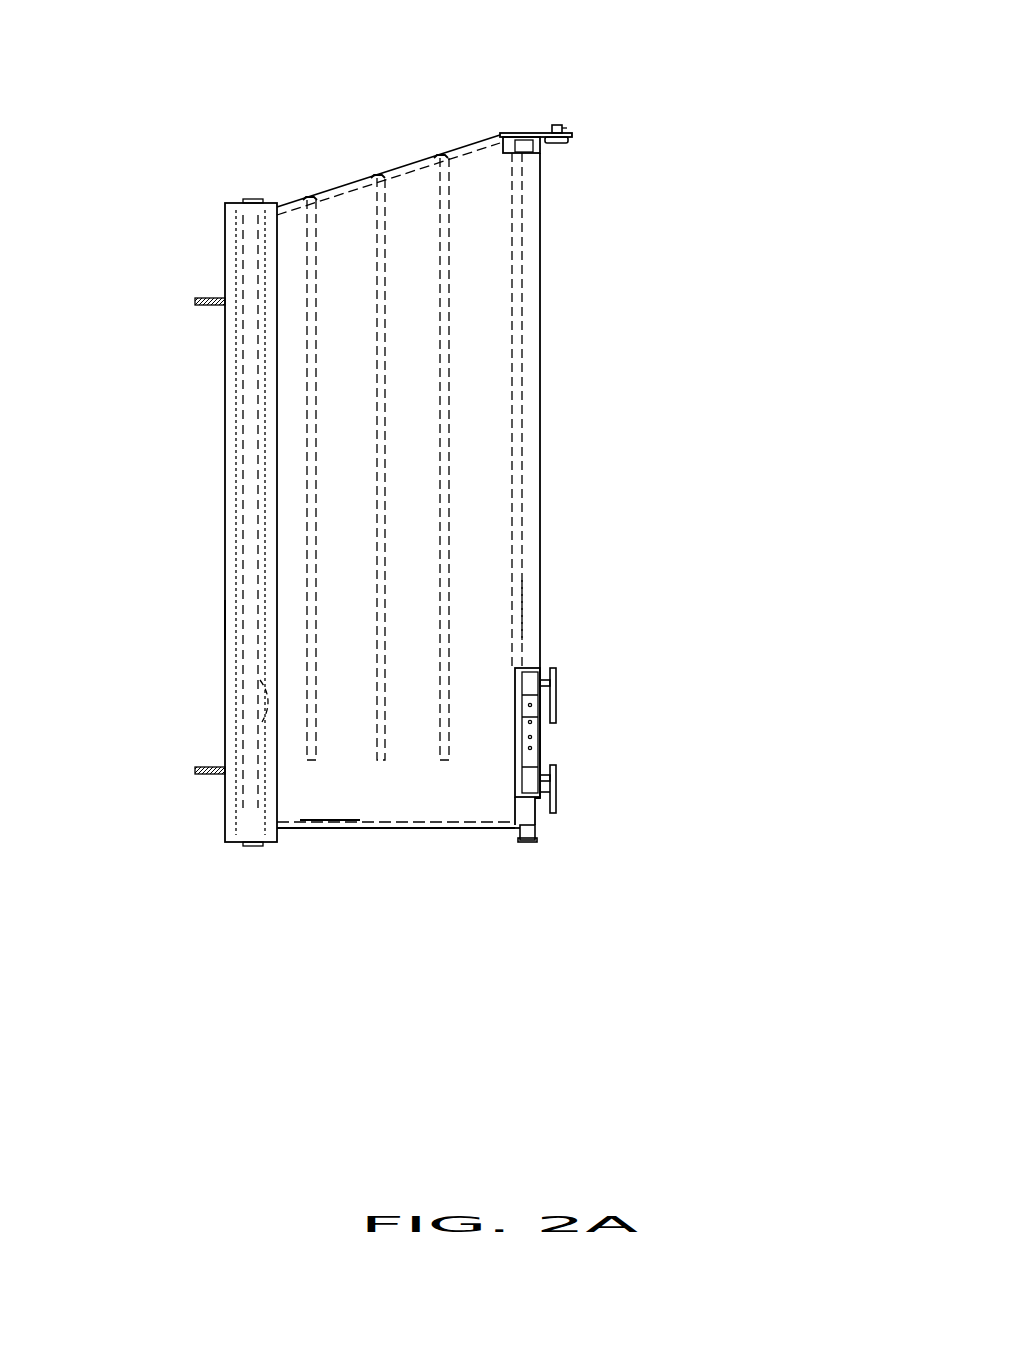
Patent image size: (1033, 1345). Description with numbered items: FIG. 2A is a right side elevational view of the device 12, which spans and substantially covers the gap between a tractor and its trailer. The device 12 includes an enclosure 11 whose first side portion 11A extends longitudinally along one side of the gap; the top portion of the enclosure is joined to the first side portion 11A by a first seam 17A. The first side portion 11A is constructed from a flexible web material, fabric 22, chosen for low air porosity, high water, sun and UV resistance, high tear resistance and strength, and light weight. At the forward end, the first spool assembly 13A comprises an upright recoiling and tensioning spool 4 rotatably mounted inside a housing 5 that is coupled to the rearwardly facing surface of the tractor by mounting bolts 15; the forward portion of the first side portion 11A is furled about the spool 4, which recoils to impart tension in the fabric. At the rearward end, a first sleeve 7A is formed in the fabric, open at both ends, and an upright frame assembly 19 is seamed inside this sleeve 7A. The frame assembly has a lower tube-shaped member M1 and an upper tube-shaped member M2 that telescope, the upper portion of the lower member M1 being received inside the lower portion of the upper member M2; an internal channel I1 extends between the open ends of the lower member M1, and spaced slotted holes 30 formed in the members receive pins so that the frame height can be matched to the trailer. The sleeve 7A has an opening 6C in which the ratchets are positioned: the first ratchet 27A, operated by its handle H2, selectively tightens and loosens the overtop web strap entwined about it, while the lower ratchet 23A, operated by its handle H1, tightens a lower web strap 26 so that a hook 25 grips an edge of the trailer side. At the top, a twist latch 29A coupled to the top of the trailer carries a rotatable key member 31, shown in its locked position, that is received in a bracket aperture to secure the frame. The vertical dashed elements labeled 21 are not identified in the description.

The device 12 is at (360, 75).
The first seam 17A is at (366, 182).
The upright frame assembly 19 is at (527, 133).
The rotatable key member 31 is at (560, 124).
The twist latch 29A is at (568, 142).
The mounting bolts 15 is at (198, 298).
The picket post 21 is at (375, 387).
The fabric 22 is at (472, 530).
The first sleeve 7A is at (540, 566).
The opening 6C is at (512, 668).
The first ratchet 27A is at (540, 668).
The upper tube-shaped member M2 is at (553, 697).
The handle H2 is at (556, 711).
The spaced slotted holes 30 is at (540, 737).
The lower tube-shaped member M1 is at (540, 748).
The lower ratchet 23A is at (555, 792).
The handle H1 is at (557, 810).
The lower web strap 26 is at (540, 832).
The hook 25 is at (527, 845).
The first spool assembly 13A is at (225, 614).
The housing 5 is at (225, 660).
The upright recoiling and tensioning spool 4 is at (258, 725).
The internal channel I1 is at (520, 833).
The enclosure 11 is at (348, 830).
The first side portion 11A is at (330, 787).